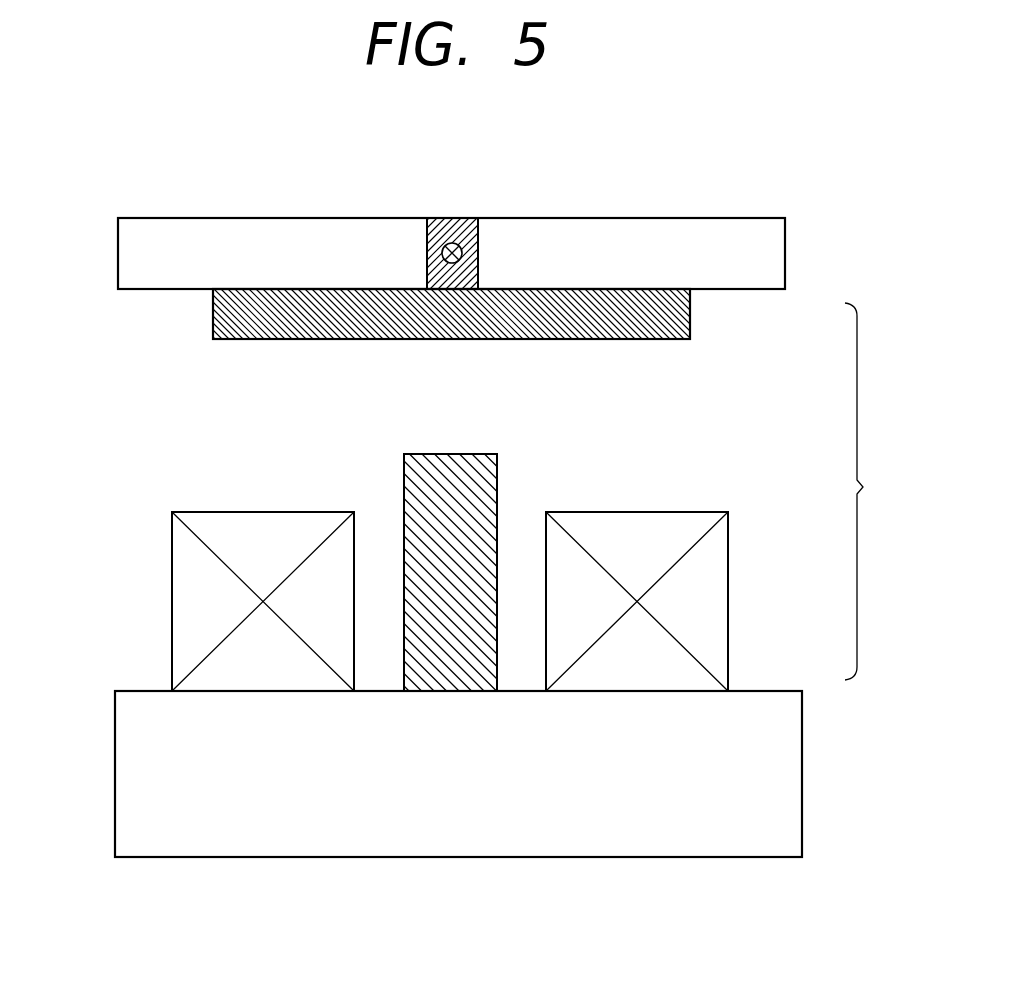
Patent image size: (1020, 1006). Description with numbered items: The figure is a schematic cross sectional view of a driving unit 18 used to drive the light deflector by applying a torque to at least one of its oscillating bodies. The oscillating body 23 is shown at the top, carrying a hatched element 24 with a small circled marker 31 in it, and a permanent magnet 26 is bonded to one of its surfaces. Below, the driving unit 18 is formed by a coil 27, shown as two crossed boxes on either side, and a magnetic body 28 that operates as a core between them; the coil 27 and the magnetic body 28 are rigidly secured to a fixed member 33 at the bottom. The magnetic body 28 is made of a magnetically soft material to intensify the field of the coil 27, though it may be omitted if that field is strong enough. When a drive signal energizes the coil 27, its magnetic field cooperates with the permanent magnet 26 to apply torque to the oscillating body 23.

The driving unit 18 is at (871, 491).
The oscillating body 23 is at (118, 241).
The magnetic recording element 24 is at (427, 246).
The permanent magnet 26 is at (690, 312).
The coil 27 is at (172, 555).
The magnetic body 28 is at (404, 466).
The spin torque oscillator 31 is at (450, 243).
The fixed member 33 is at (802, 760).